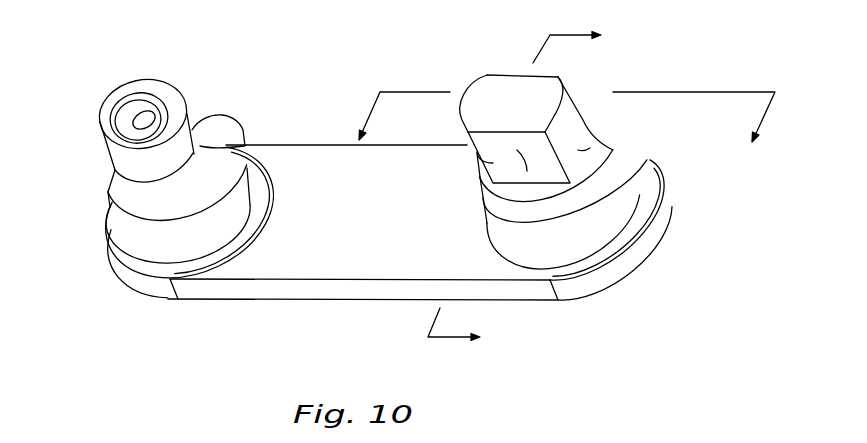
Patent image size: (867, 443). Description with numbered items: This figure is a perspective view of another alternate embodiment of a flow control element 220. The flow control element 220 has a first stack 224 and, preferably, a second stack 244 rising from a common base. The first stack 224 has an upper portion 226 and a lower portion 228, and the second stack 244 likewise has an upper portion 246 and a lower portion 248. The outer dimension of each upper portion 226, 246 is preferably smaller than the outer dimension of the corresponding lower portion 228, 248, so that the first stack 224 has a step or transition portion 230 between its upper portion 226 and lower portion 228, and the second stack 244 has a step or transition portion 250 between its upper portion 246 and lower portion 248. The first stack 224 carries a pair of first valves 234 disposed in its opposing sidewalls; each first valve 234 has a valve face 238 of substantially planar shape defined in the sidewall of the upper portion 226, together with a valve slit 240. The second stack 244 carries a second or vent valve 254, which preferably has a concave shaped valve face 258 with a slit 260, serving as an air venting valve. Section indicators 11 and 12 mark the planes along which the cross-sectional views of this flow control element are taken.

The flow control element 220 is at (292, 295).
The first stack 224 is at (640, 243).
The upper portion 226 is at (580, 150).
The lower portion 228 is at (603, 217).
The transition portion 230 is at (590, 181).
The first valve 234 is at (517, 70).
The valve face 238 is at (477, 163).
The valve slit 240 is at (480, 149).
The second stack 244 is at (120, 261).
The upper portion 246 is at (117, 165).
The lower portion 248 is at (163, 242).
The transition portion 250 is at (200, 152).
The vent valve 254 is at (170, 75).
The valve face 258 is at (131, 103).
The slit 260 is at (133, 130).
The section line 11- 11 is at (564, 119).
The section line 12- 12 is at (527, 189).